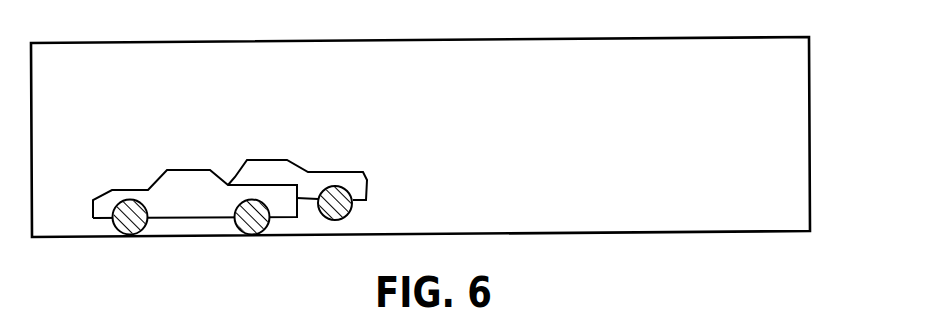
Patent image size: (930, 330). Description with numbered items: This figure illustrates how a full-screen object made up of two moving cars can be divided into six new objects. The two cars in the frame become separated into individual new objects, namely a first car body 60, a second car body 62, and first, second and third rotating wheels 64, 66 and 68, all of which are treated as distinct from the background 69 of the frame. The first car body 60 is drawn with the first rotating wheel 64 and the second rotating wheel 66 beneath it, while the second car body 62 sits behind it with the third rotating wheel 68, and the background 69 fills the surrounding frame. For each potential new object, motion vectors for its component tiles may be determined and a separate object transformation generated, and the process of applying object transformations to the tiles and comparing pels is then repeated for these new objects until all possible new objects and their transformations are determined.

The first car body 60 is at (187, 170).
The second car body 62 is at (268, 160).
The first rotating wheel 64 is at (131, 232).
The second rotating wheel 66 is at (249, 232).
The third rotating wheel 68 is at (350, 214).
The background 69 is at (590, 174).